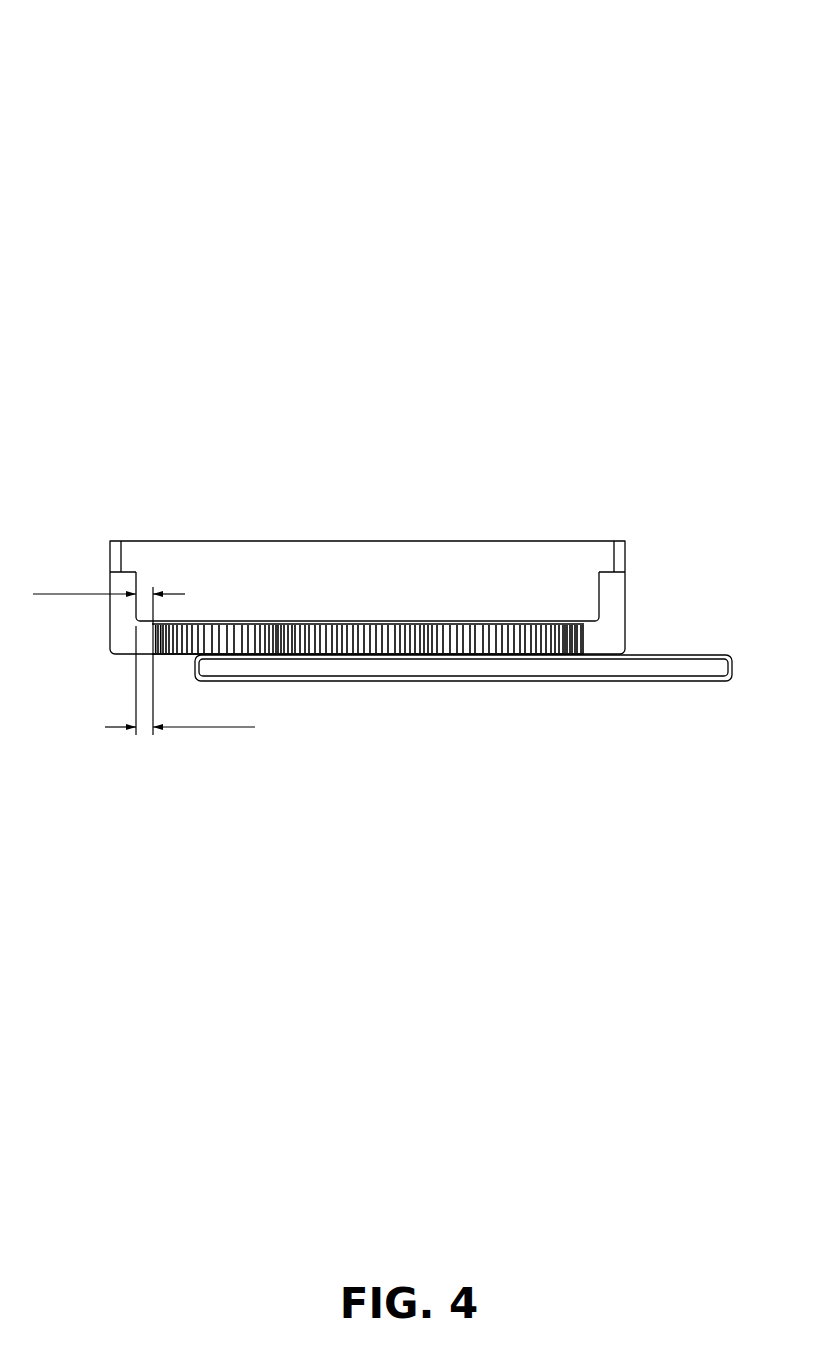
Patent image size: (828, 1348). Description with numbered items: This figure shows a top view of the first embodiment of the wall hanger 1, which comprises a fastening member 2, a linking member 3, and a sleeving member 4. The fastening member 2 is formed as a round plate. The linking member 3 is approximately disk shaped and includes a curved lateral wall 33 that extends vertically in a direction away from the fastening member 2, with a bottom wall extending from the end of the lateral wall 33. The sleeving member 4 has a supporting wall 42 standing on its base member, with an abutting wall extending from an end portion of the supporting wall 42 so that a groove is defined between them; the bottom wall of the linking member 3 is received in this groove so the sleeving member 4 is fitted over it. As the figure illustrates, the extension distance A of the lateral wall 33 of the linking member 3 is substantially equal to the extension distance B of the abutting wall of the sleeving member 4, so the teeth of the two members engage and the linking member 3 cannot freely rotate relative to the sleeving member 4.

The wall hanger 1 is at (26, 32).
The fastening member 2 is at (637, 681).
The linking member 3 is at (462, 686).
The lateral wall 33 is at (473, 640).
The sleeving member 4 is at (410, 541).
The supporting wall 42 is at (478, 590).